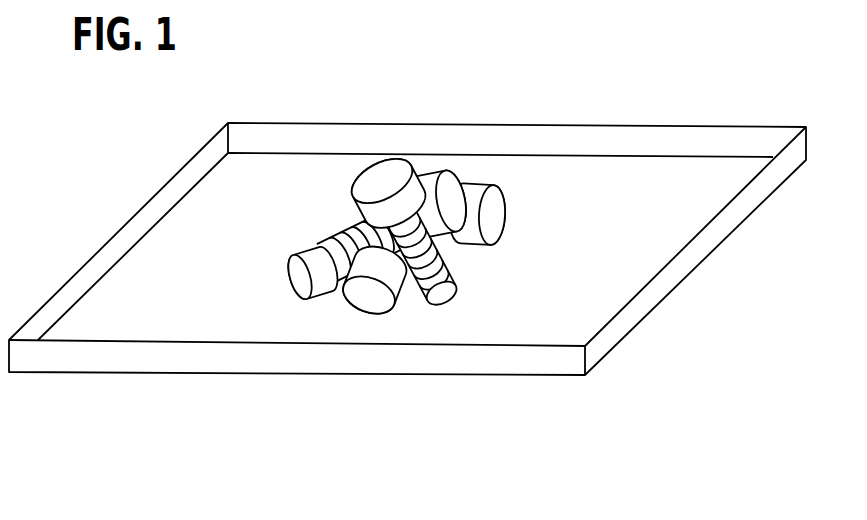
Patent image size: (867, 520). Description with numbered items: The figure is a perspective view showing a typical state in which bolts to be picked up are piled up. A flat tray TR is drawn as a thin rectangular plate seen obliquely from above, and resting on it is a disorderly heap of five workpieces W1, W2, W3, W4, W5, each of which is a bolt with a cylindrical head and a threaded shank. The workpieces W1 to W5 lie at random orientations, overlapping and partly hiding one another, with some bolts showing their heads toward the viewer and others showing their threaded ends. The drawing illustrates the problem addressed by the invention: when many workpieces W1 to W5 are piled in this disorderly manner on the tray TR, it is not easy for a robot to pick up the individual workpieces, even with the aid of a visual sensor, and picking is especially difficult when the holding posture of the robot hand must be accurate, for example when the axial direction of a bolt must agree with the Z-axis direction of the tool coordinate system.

The tray TR is at (662, 300).
The workpiece W1 is at (301, 286).
The workpiece W2 is at (373, 302).
The workpiece W3 is at (378, 180).
The workpiece W4 is at (454, 195).
The workpiece W5 is at (500, 205).